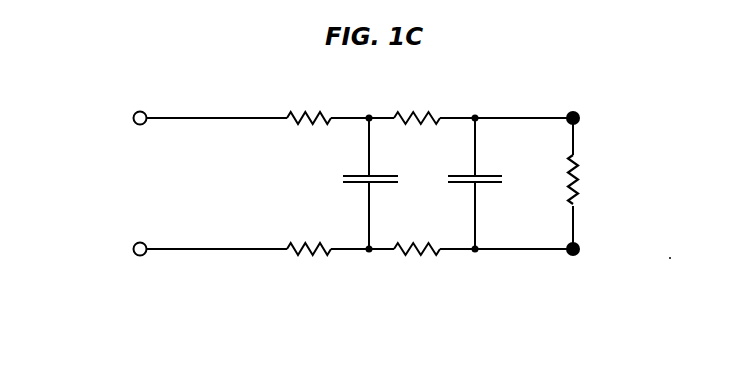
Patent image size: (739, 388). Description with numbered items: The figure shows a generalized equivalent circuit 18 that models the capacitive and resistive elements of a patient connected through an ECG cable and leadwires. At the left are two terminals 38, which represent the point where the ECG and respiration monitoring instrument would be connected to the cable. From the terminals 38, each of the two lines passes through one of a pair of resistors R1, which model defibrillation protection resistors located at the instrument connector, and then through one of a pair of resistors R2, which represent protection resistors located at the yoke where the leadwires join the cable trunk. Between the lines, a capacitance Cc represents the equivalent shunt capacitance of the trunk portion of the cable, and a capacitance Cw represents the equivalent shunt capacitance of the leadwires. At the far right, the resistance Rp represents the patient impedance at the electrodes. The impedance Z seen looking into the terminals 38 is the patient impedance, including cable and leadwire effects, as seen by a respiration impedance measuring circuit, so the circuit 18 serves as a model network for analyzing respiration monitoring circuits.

The generalized equivalent circuit 18 is at (172, 310).
The terminals 38 is at (138, 125).
The defibrillation protection resistors at instrument connector R1 is at (309, 180).
The protection resistors at yoke R2 is at (417, 180).
The equivalent shunt capacitance of cable trunk Cc is at (384, 184).
The equivalent shunt capacitance of leadwires Cw is at (491, 184).
The patient impedance resistance Rp is at (589, 179).
The impedance Z is at (160, 184).